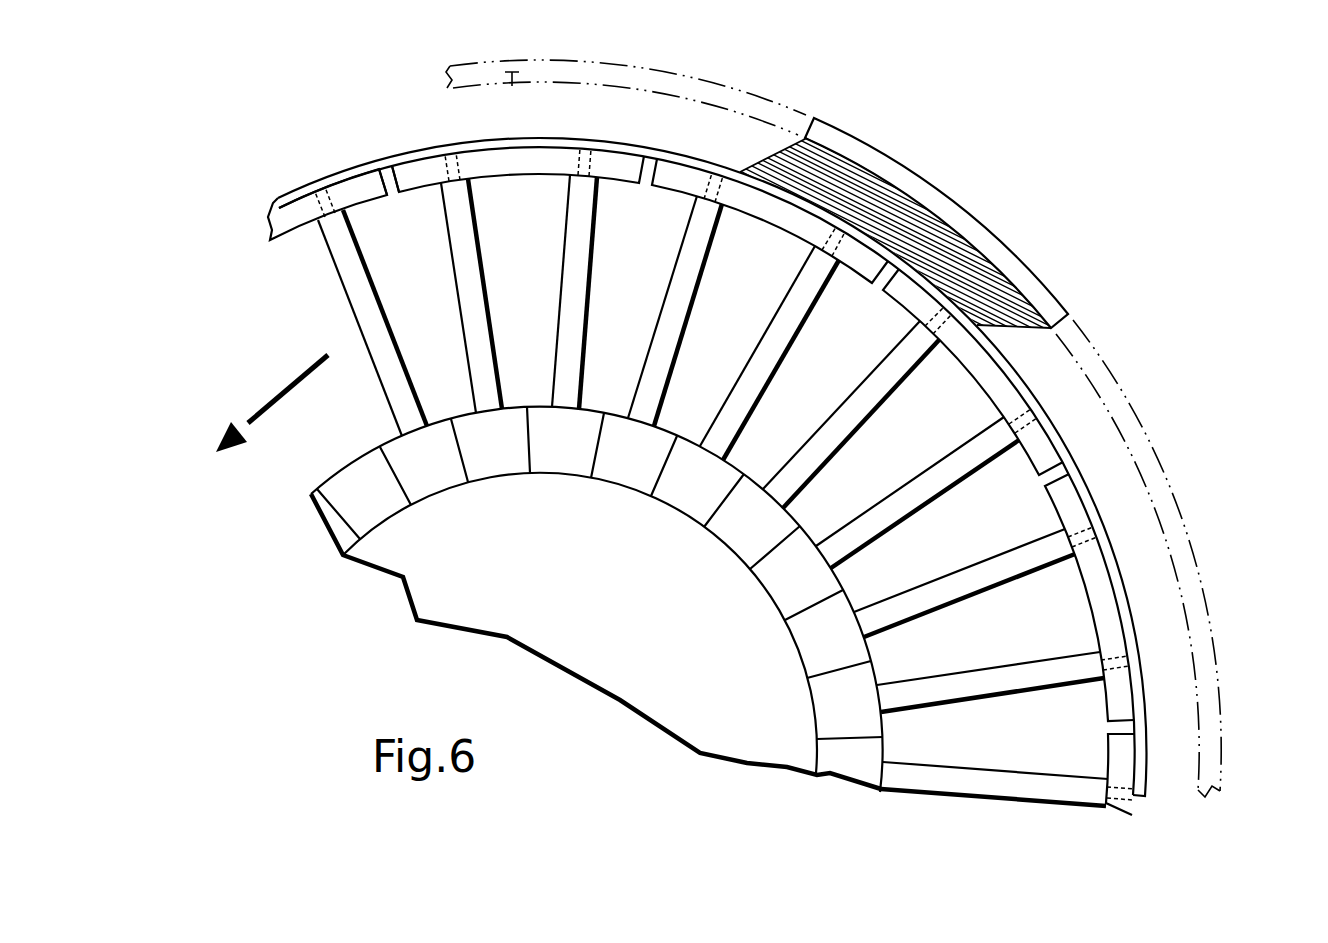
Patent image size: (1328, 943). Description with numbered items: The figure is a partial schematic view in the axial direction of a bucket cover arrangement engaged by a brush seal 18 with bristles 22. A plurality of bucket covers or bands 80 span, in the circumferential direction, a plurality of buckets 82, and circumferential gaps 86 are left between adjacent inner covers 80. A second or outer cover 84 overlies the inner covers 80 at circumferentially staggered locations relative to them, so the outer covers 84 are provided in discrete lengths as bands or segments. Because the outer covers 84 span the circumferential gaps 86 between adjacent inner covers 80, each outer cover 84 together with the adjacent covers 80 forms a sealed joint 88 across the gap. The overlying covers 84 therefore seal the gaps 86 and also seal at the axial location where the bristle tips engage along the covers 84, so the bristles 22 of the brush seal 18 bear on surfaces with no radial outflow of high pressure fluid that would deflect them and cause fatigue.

The brush seal 18 is at (942, 178).
The bristles 22 is at (775, 167).
The bucket covers 80 is at (510, 167).
The buckets 82 is at (470, 297).
The outer cover 84 is at (340, 173).
The circumferential gaps 86 is at (388, 190).
The sealed joint 88 is at (382, 165).